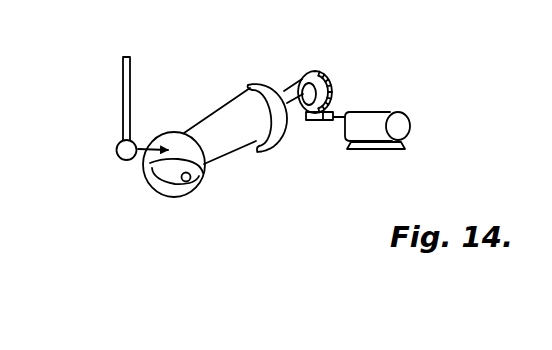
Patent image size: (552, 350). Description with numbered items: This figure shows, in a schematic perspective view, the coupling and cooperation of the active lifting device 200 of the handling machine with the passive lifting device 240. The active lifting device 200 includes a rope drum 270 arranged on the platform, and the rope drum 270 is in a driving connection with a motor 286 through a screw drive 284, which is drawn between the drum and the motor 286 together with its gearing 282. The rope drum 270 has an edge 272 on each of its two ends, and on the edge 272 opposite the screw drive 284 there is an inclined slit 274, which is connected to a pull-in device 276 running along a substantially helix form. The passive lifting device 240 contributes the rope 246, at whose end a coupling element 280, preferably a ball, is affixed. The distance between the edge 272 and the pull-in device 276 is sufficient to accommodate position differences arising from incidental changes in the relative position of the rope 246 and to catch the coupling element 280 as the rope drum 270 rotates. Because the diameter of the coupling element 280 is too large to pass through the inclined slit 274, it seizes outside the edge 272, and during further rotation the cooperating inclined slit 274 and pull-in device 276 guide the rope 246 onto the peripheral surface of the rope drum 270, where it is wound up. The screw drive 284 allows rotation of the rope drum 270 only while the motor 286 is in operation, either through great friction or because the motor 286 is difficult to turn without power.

The active lifting device 200 is at (323, 187).
The passive lifting device 240 is at (82, 49).
The rope 246 is at (123, 93).
The rope drum 270 is at (211, 121).
The edge 272 is at (261, 86).
The inclined slit 274 is at (206, 168).
The pull-in device 276 is at (148, 196).
The coupling element 280 is at (120, 157).
The gear 282 is at (341, 72).
The screw drive 284 is at (345, 95).
The motor 286 is at (371, 126).